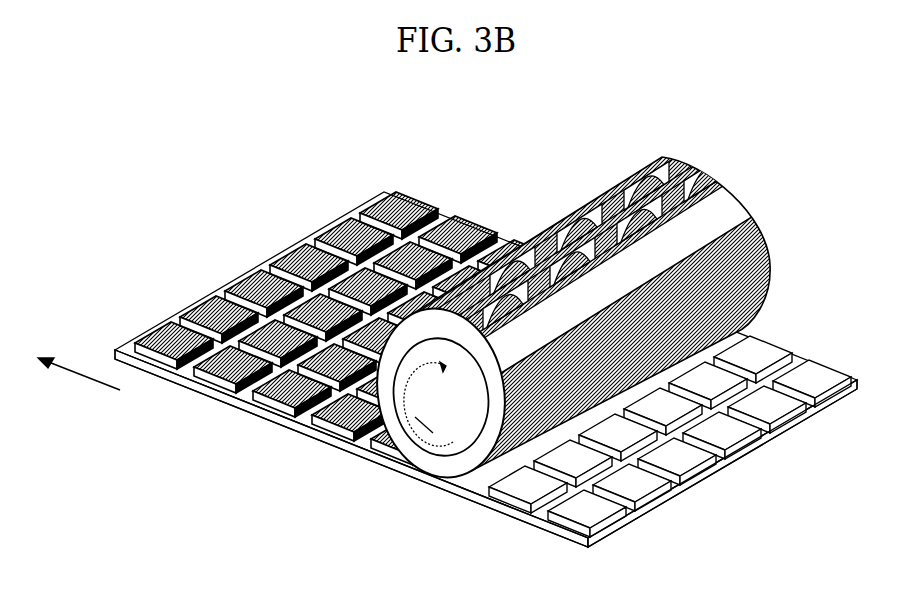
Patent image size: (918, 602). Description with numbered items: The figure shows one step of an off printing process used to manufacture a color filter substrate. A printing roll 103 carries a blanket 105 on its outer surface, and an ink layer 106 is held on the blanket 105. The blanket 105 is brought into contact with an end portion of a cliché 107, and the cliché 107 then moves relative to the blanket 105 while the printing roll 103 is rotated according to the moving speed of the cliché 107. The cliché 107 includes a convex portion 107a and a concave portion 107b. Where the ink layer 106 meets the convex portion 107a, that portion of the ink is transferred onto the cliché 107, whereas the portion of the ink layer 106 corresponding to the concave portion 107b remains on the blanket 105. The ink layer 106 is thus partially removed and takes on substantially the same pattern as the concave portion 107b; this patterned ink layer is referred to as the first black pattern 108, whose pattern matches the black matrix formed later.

The printing roll 103 is at (428, 432).
The blanket 105 is at (463, 472).
The ink layer 106 is at (340, 230).
The cliché 107 is at (823, 540).
The convex portion 107a is at (648, 491).
The concave portion 107b is at (705, 477).
The first black pattern 108 is at (656, 162).